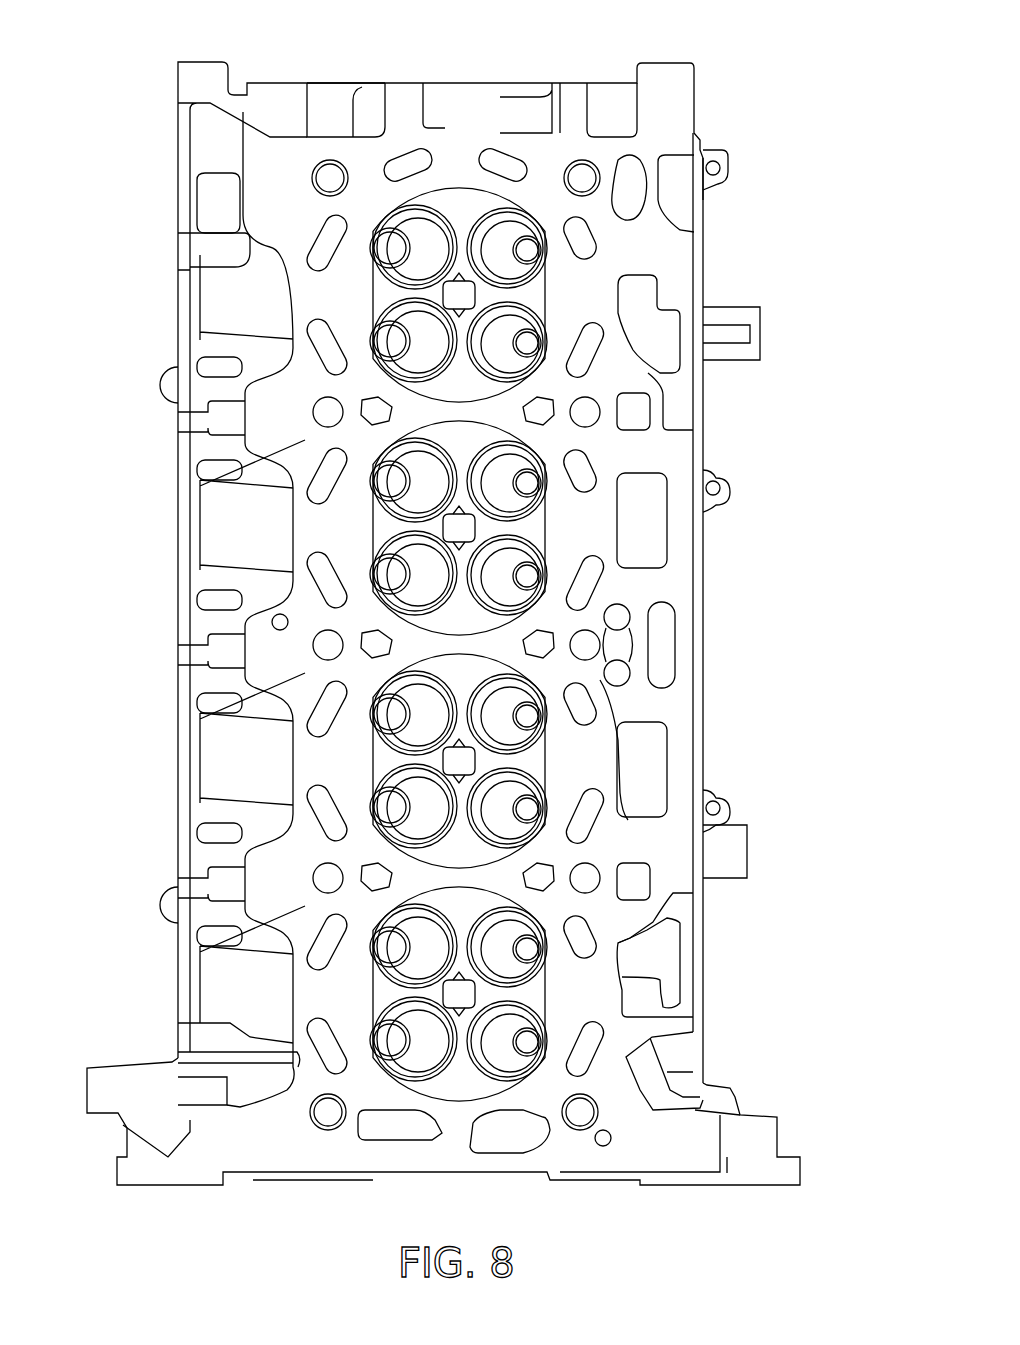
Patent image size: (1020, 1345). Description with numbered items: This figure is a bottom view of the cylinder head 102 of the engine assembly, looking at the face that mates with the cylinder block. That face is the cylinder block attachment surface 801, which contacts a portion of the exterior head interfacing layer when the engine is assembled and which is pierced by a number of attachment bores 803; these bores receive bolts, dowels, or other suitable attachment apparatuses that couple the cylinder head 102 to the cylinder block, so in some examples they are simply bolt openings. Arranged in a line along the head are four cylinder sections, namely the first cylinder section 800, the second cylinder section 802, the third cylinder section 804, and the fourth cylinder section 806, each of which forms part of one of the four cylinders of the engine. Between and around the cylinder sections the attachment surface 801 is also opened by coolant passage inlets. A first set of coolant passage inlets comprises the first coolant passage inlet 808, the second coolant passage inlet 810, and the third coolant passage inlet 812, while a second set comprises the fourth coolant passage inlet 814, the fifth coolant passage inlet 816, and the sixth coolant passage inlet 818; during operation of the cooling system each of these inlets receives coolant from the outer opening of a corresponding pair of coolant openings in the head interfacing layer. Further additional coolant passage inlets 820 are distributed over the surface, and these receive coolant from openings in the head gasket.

The cylinder head 102 is at (750, 87).
The first cylinder section 800 is at (458, 994).
The cylinder block attachment surface 801 is at (407, 97).
The second cylinder section 802 is at (458, 761).
The attachment bores 803 is at (332, 177).
The third cylinder section 804 is at (458, 528).
The fourth cylinder section 806 is at (458, 295).
The first coolant passage inlet 808 is at (549, 880).
The second coolant passage inlet 810 is at (549, 647).
The third coolant passage inlet 812 is at (549, 414).
The fourth coolant passage inlet 814 is at (366, 880).
The fifth coolant passage inlet 816 is at (366, 647).
The sixth coolant passage inlet 818 is at (366, 414).
The additional coolant passage inlets 820 is at (493, 160).